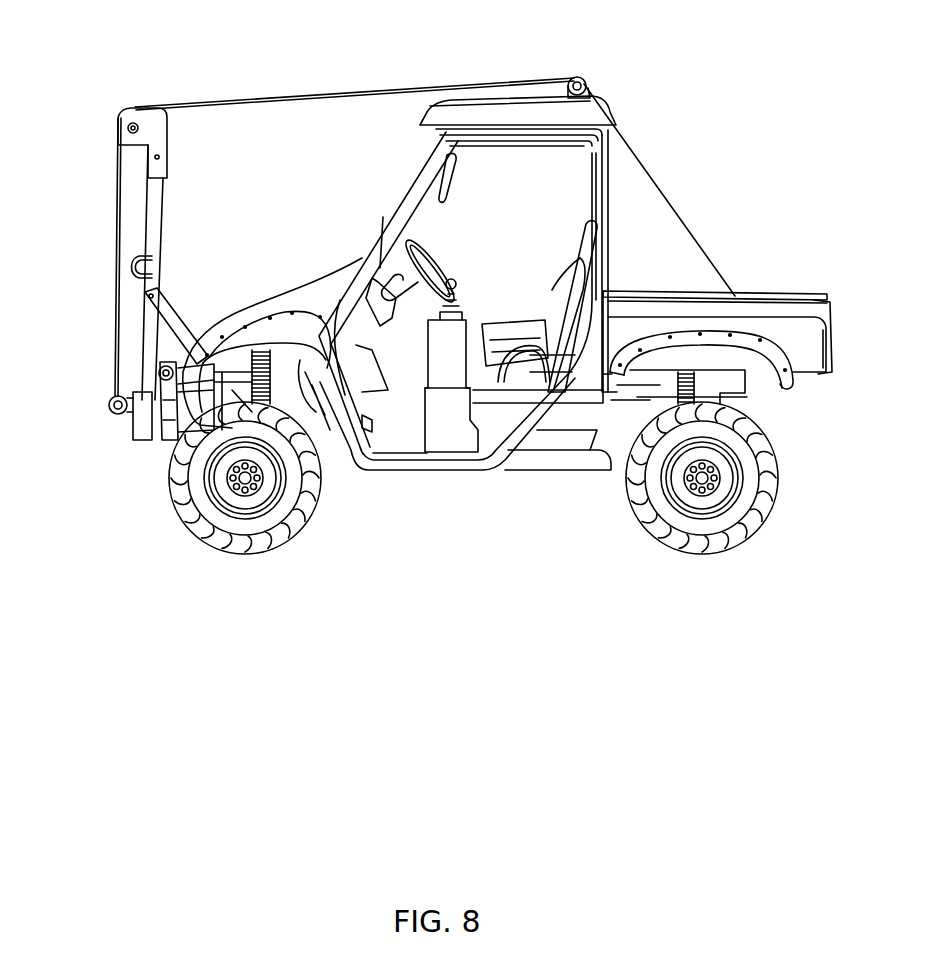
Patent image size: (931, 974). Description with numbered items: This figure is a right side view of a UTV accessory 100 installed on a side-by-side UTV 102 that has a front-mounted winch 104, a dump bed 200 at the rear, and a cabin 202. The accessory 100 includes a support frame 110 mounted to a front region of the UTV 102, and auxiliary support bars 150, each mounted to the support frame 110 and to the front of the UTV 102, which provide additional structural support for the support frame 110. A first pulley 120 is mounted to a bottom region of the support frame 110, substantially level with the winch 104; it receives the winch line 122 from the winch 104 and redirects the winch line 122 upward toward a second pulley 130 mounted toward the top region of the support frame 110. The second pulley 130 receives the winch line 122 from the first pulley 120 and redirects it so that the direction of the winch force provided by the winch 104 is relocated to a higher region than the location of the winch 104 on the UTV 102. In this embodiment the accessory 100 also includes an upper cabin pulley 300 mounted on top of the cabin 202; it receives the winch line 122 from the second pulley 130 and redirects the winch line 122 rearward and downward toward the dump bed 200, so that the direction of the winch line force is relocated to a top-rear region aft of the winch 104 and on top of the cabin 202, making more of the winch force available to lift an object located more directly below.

The UTV accessory 100 is at (147, 51).
The side-by-side UTV 102 is at (503, 50).
The front-mounted winch 104 is at (160, 380).
The support frame 110 is at (158, 232).
The first pulley 120 is at (115, 402).
The winch line 122 is at (332, 94).
The second pulley 130 is at (123, 128).
The auxiliary support bar 150 is at (167, 300).
The dump bed 200 is at (757, 280).
The cabin 202 is at (470, 113).
The upper cabin pulley 300 is at (575, 78).